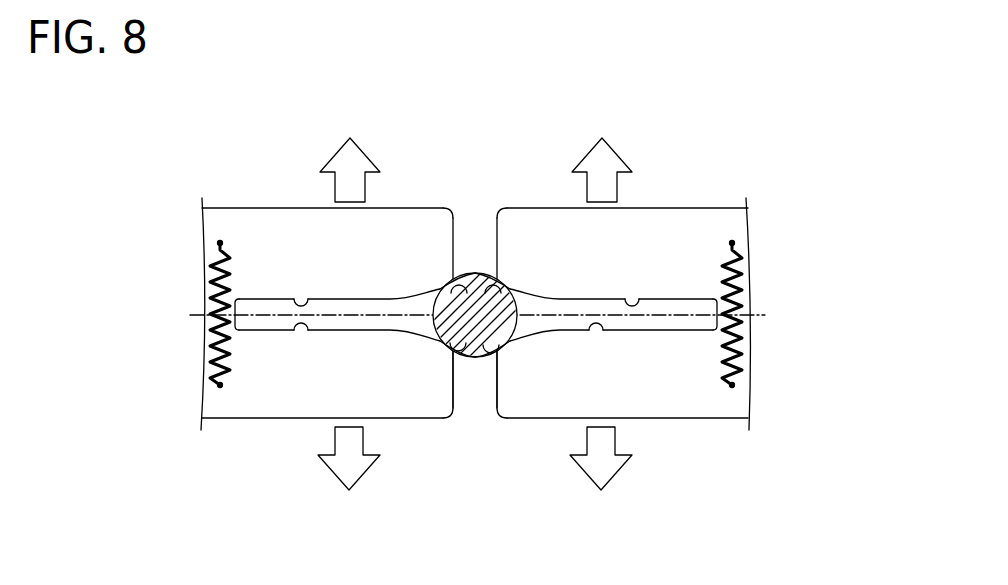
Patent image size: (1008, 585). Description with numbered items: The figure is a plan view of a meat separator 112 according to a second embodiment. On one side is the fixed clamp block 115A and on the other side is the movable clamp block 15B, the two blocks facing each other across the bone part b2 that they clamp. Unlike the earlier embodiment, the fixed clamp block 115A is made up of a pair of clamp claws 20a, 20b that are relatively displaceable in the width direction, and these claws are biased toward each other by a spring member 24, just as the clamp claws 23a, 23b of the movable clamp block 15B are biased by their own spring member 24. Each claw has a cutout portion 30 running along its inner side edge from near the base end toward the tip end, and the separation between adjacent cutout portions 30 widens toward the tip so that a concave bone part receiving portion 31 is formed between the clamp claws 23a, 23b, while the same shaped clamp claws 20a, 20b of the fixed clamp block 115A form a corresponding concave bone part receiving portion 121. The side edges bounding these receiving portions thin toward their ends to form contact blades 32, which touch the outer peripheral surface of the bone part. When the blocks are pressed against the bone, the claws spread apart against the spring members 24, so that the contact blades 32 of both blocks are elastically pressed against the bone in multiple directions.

The meat separator 112 is at (725, 158).
The fixed clamp block 115A is at (252, 432).
The movable clamp block 15B is at (725, 432).
The clamp claw 20a is at (308, 432).
The clamp claw 20b is at (316, 196).
The clamp claw 23a is at (665, 432).
The clamp claw 23b is at (663, 196).
The spring member 24 is at (213, 375).
The cutout portion 30 is at (305, 300).
The contact blade 32 is at (445, 288).
The bone part receiving portion 121 is at (469, 274).
The bone part receiving portion 31 is at (481, 274).
The gap width b2 (b) b2 is at (436, 292).